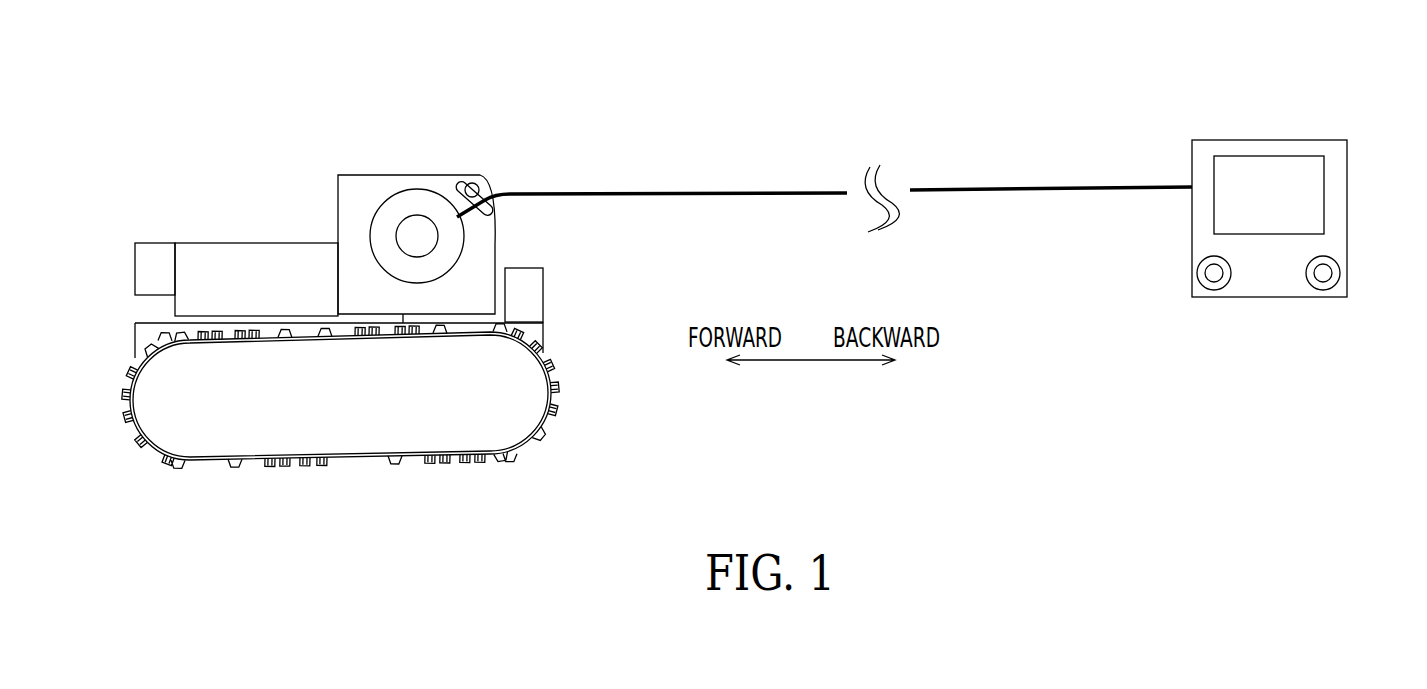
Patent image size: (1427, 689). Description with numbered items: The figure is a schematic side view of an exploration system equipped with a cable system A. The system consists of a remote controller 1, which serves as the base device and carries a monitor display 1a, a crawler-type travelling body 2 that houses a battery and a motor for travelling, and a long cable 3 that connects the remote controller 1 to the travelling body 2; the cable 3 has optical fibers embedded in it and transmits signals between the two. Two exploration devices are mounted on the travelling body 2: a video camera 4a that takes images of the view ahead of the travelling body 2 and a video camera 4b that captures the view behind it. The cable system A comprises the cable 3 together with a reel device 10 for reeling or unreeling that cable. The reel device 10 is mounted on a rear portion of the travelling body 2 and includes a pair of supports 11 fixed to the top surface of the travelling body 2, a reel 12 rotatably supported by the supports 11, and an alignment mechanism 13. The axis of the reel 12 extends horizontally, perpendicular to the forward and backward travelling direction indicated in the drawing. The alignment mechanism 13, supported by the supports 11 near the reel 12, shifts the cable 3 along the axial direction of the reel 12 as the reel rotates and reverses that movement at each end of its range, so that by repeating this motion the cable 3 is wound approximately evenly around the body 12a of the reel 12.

The remote controller 1 is at (1307, 166).
The monitor display 1a is at (1287, 200).
The crawler-type travelling body 2 is at (365, 427).
The cable 3 is at (790, 191).
The video camera 4a is at (158, 243).
The video camera 4b is at (543, 292).
The reel device 10 is at (407, 184).
The supports 11 is at (360, 176).
The reel 12 is at (500, 236).
The body of the reel 12a is at (438, 236).
The alignment mechanism 13 is at (459, 175).
The cable system A is at (673, 181).